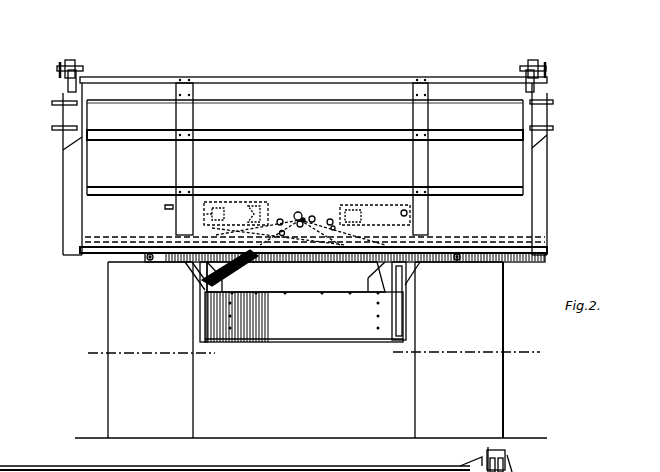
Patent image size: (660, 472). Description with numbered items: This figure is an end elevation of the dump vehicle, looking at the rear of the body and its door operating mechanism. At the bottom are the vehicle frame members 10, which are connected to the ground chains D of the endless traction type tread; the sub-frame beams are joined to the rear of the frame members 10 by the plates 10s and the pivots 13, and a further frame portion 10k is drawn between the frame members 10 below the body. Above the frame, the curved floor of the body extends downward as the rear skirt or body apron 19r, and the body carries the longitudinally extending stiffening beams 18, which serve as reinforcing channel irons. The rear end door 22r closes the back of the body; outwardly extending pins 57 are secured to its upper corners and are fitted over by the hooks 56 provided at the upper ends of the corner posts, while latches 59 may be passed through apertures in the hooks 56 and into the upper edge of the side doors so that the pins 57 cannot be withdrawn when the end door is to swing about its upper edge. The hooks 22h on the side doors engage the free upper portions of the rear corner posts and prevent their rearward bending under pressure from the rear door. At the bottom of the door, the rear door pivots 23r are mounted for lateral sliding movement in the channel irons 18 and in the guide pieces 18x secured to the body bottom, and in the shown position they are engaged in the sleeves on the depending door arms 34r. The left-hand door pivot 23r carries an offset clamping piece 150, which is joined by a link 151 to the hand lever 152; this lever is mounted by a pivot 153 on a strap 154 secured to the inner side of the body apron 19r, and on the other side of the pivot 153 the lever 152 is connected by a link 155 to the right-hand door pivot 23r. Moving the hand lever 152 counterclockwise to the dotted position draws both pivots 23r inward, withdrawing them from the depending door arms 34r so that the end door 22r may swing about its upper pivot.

The outwardly extending pins 57 is at (57, 73).
The hooks 22h is at (53, 103).
The end door 22r is at (500, 168).
The depending door arms 34r is at (176, 195).
The rear skirt (body apron) 19r is at (100, 212).
The longitudinally extending stiffening beams (body reinforcing channel irons) 18 is at (212, 200).
The offset clamping piece 150 is at (220, 207).
The rear door pivots 23r is at (260, 200).
The guide pieces 18x is at (296, 210).
The pivot 153 is at (303, 212).
The link 155 is at (362, 205).
The plates 10s is at (185, 263).
The link 151 is at (200, 263).
The pivots 13 is at (198, 278).
The hand lever 152 is at (296, 276).
The strap 154 is at (352, 270).
The vehicle frame members 10 is at (210, 344).
The frame cross member 10k is at (322, 333).
The hooks 56 is at (241, 455).
The latches 59 is at (508, 456).
The ground chains D is at (118, 330).